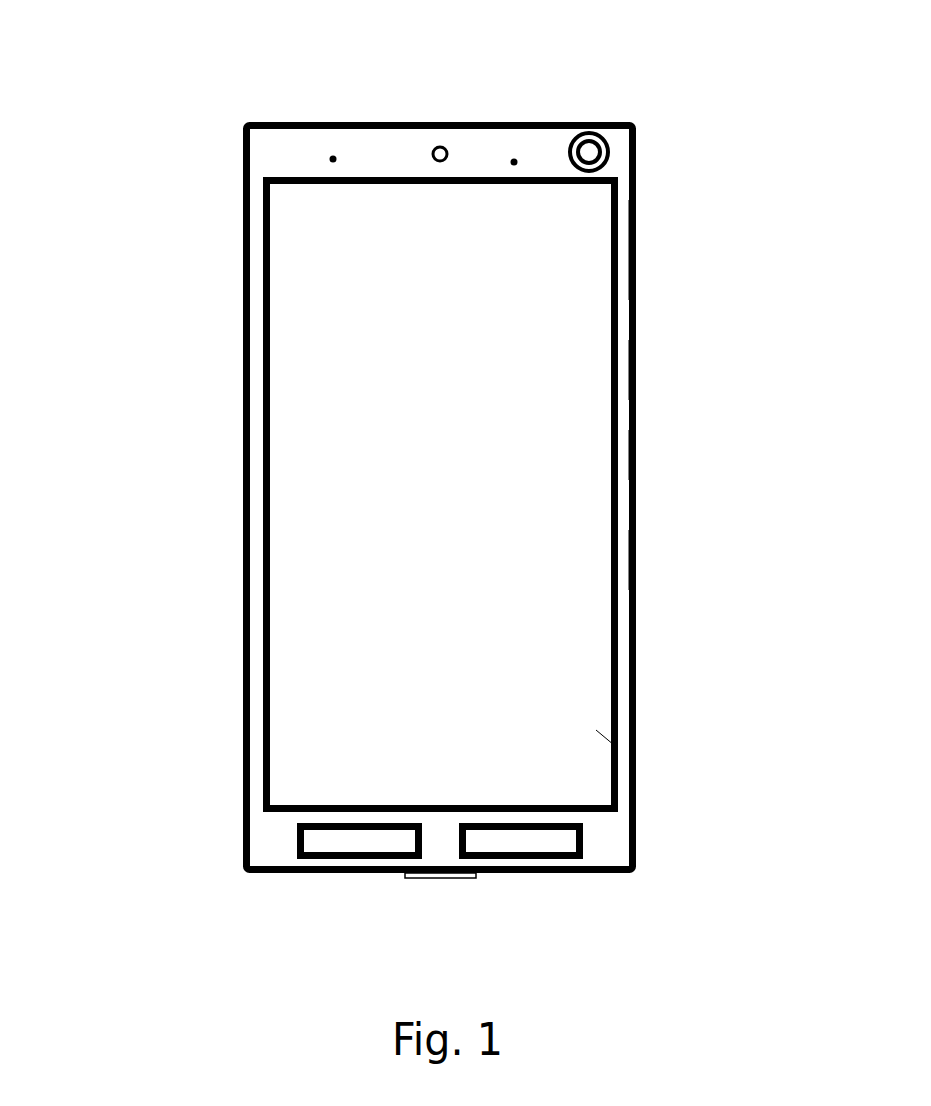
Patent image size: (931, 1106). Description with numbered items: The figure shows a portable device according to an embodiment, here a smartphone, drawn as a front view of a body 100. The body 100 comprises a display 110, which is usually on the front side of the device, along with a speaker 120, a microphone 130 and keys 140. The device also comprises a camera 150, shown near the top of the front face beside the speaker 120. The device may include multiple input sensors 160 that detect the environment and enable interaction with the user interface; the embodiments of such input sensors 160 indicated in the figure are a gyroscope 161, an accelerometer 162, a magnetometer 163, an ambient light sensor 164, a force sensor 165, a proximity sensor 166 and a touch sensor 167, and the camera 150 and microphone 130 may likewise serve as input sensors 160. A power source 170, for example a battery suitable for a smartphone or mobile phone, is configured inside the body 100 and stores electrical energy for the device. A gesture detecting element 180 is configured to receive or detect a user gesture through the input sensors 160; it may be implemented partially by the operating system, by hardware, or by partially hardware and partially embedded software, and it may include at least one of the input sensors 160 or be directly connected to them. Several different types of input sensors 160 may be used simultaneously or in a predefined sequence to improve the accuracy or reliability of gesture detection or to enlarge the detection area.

The body 100 is at (258, 157).
The display 110 is at (292, 390).
The speaker 120 is at (440, 147).
The microphone 130 is at (440, 878).
The keys 140 is at (477, 827).
The camera 150 is at (600, 145).
The input sensors 160 is at (662, 251).
The gyroscope 161 is at (636, 368).
The accelerometer 162 is at (634, 455).
The magnetometer 163 is at (635, 565).
The ambient light sensor 164 is at (333, 159).
The force sensor 165 is at (625, 655).
The proximity sensor 166 is at (514, 162).
The touch sensor 167 is at (600, 740).
The power source 170 is at (212, 468).
The gesture detecting element 180 is at (212, 650).